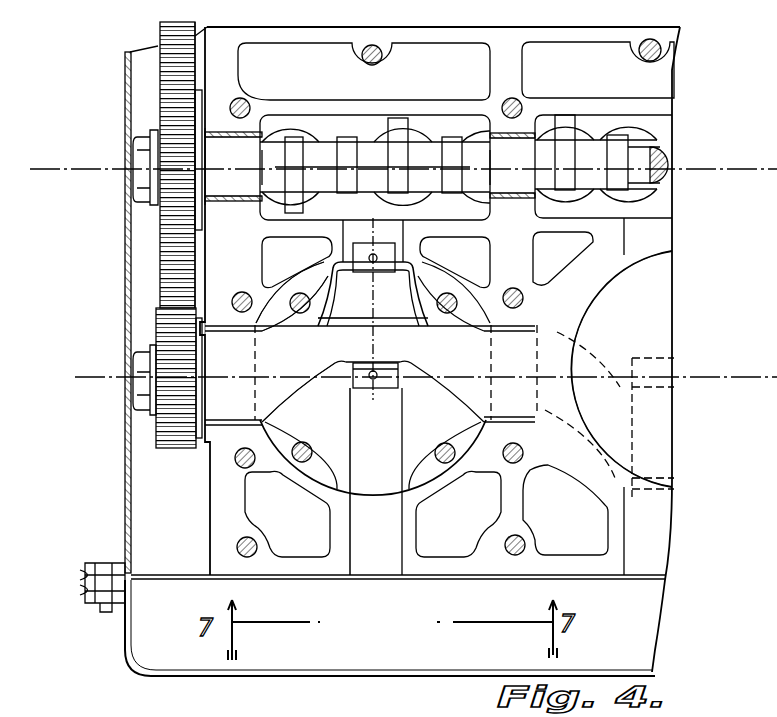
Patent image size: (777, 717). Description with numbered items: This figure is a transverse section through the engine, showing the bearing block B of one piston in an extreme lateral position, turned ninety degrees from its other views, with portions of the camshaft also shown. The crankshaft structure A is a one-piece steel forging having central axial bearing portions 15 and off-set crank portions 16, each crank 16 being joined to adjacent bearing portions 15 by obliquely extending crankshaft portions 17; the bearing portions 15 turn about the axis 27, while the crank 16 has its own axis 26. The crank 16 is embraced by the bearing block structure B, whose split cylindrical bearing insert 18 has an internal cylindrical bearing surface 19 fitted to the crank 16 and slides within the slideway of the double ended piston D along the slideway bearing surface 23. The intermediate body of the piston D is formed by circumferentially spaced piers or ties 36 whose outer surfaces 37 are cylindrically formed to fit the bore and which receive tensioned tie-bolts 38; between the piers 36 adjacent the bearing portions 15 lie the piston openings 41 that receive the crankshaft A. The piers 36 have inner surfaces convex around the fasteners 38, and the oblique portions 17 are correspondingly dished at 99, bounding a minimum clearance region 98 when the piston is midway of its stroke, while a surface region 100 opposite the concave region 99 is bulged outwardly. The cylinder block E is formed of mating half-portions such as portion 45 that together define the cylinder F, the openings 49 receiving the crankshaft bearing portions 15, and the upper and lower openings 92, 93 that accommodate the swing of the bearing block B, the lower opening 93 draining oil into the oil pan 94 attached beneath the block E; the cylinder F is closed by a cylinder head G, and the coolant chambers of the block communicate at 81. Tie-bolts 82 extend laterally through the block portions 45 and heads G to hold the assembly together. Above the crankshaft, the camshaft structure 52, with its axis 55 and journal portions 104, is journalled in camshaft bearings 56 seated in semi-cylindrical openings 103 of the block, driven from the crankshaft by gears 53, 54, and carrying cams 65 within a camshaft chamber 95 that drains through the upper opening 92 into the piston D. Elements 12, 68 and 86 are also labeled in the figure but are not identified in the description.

The cylinder block 12 is at (212, 340).
The central axial bearing portions 15 is at (528, 348).
The off-set crank portions 16 is at (392, 342).
The obliquely extending crankshaft portions 17 is at (305, 389).
The split cylindrical bearing insert 18 is at (362, 272).
The internal cylindrical bearing surface 19 is at (365, 366).
The slideway bearing surface 23 is at (395, 444).
The axis of the crank 26 is at (336, 320).
The axis of the bearing portions 27 is at (98, 377).
The piers or ties 36 is at (318, 262).
The outer surfaces of the piers 37 is at (272, 315).
The tie-bolt 38 is at (484, 277).
The piston slots or openings 41 is at (475, 330).
The component half-portion of the block 45 is at (212, 525).
The openings for the crankshaft 49 is at (242, 333).
The camshaft structure 52 is at (650, 152).
The gear 53 is at (157, 322).
The gear 54 is at (160, 250).
The camshaft axis 55 is at (58, 169).
The camshaft bearings 56 is at (245, 128).
The cams 65 is at (390, 130).
The web 68 is at (370, 208).
The coolant circulation openings 81 is at (265, 243).
The tie-bolts 82 is at (385, 62).
The bearing cap 86 is at (382, 256).
The upper opening or slot 92 is at (385, 230).
The lower opening or slot 93 is at (375, 570).
The oil pan 94 is at (130, 640).
The camshaft chamber 95 is at (458, 118).
The minimum clearance 98 is at (338, 262).
The dished or concaved region 99 is at (318, 258).
The bulged surface region 100 is at (303, 412).
The semi-cylindrical openings 103 is at (228, 200).
The journal portions 104 is at (276, 150).
The crankshaft structure A is at (222, 445).
The bearing block structure B is at (400, 392).
The double ended piston D is at (470, 438).
The cylinder block E is at (617, 247).
The cylinder F is at (580, 282).
The cylinder head G is at (653, 423).